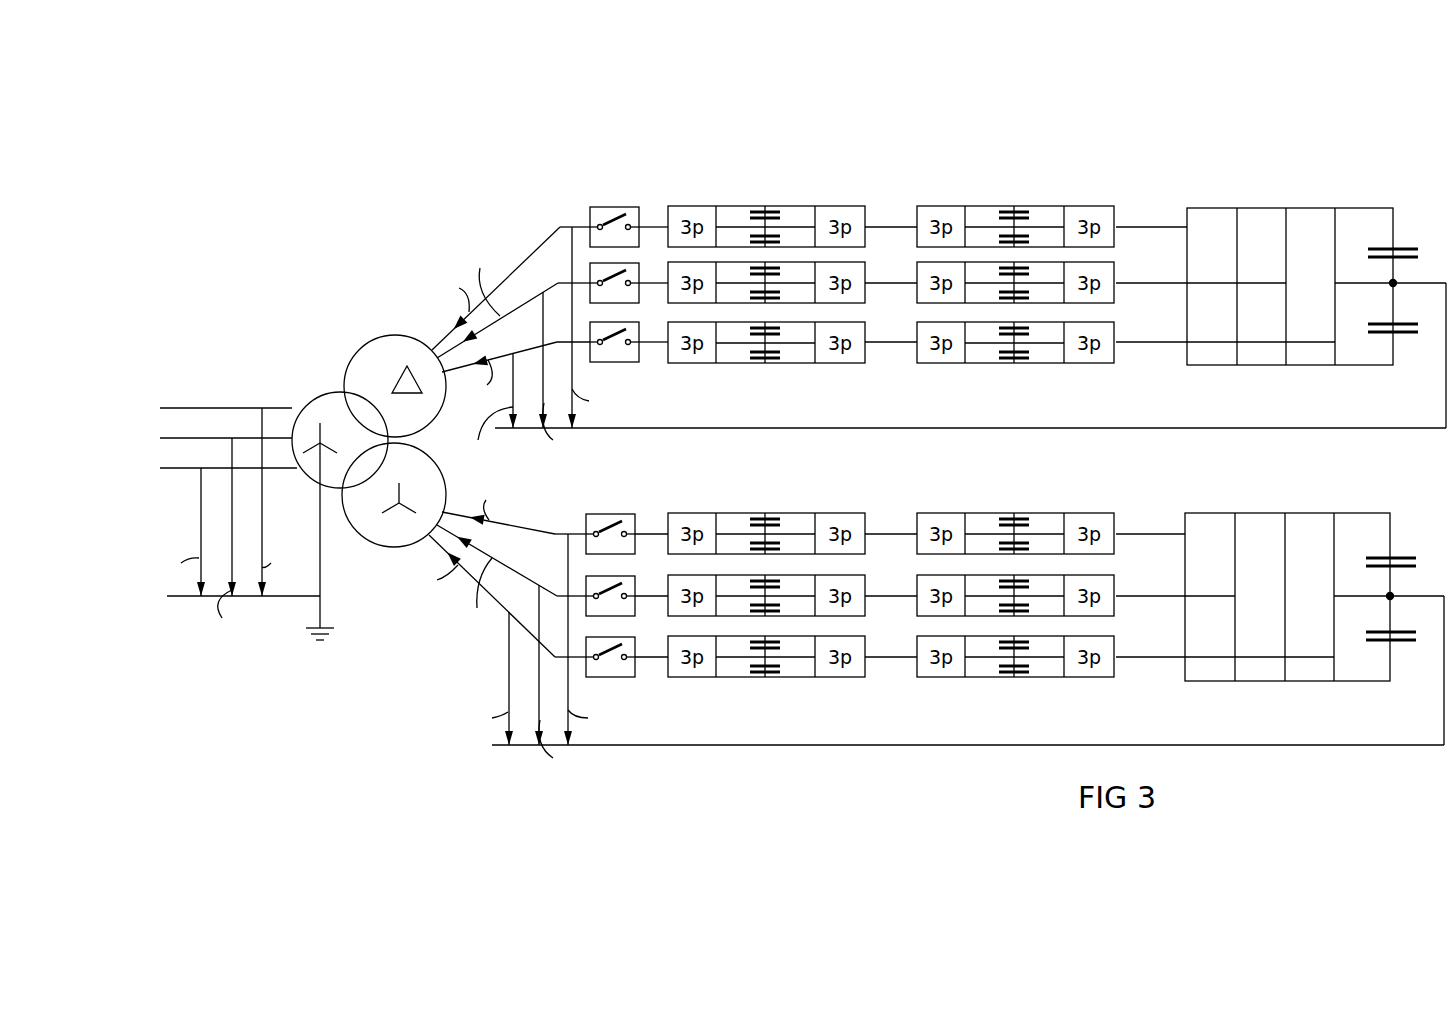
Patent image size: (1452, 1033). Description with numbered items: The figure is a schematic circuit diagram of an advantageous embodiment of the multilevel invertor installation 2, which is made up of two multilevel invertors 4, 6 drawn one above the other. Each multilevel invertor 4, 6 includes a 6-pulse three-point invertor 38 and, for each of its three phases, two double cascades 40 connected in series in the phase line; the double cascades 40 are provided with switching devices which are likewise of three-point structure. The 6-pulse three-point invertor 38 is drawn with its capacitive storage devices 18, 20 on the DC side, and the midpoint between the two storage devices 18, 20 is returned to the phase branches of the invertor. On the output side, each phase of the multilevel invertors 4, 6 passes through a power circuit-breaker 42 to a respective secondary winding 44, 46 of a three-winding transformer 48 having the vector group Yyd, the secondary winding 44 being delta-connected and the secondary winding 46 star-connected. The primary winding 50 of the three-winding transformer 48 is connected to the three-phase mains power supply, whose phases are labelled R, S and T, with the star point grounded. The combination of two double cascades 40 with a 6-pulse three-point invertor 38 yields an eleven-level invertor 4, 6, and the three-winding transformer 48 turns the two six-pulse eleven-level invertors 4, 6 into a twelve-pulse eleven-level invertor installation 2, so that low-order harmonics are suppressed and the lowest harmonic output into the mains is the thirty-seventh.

The multilevel invertor installation 2 is at (849, 795).
The multilevel invertor 4 is at (948, 182).
The multilevel invertor 6 is at (941, 727).
The capacitive storage device 18 is at (1406, 248).
The capacitive storage device 20 is at (1410, 335).
The 6-pulse three-point invertor 38 is at (1280, 208).
The double cascade 40 is at (858, 207).
The power circuit-breaker 42 is at (626, 206).
The secondary winding 44 is at (390, 336).
The secondary winding 46 is at (364, 546).
The three-winding transformer 48 is at (310, 528).
The primary winding 50 is at (310, 396).